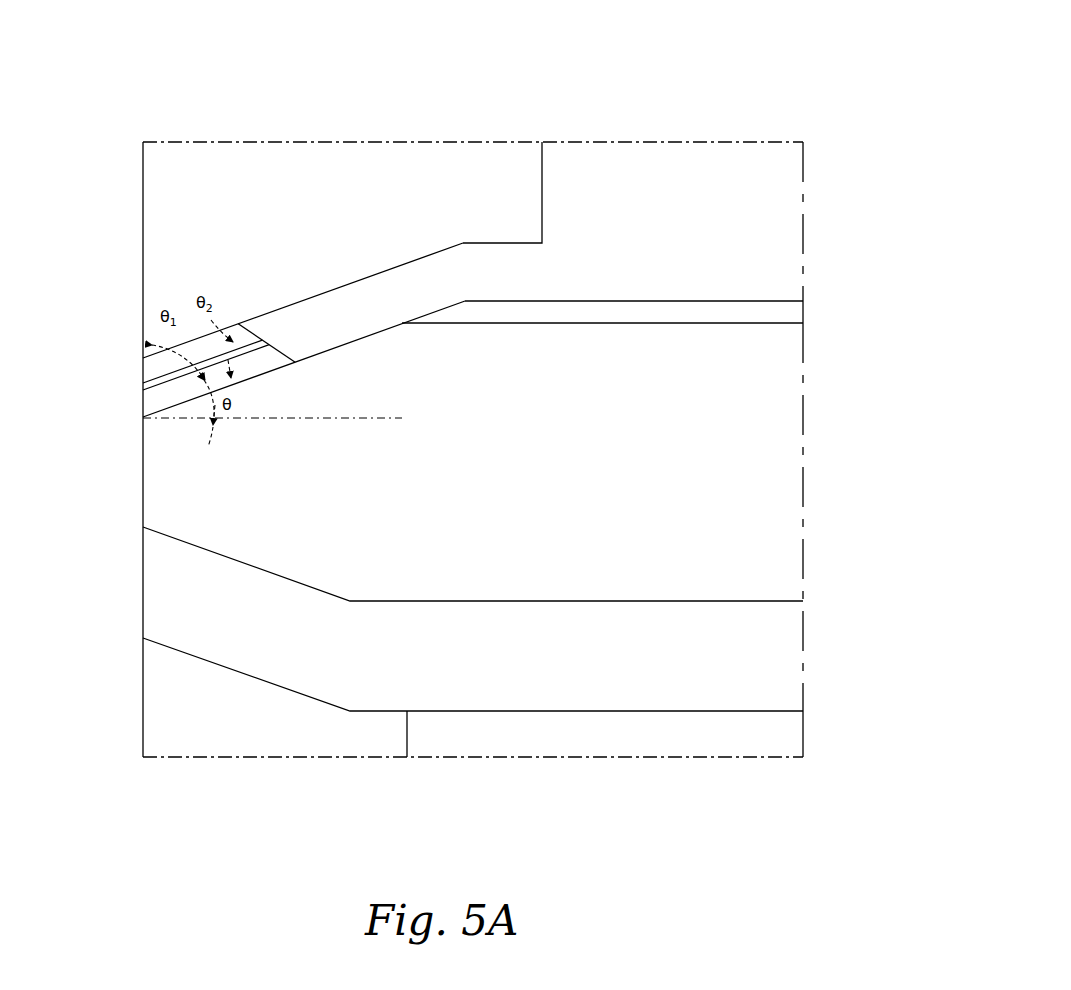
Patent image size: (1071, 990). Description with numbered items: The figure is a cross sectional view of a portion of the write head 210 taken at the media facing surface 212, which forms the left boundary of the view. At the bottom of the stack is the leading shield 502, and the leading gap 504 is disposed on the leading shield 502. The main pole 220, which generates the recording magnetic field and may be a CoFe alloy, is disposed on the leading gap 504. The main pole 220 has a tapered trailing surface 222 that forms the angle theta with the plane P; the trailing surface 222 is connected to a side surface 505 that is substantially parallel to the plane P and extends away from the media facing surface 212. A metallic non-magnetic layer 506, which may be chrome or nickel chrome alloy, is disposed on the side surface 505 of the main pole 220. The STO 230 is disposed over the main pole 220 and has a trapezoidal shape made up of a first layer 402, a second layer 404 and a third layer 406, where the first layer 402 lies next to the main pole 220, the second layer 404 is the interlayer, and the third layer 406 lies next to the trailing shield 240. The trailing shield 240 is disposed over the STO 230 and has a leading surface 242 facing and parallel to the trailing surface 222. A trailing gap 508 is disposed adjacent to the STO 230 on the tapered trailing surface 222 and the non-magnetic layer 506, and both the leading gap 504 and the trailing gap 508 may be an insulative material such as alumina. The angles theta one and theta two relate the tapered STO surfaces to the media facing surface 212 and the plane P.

The write head 210 is at (650, 85).
The media facing surface 212 is at (143, 193).
The main pole 220 is at (544, 472).
The trailing surface 222 is at (338, 347).
The STO 230 is at (78, 335).
The trailing shield 240 is at (300, 227).
The leading surface 242 is at (426, 254).
The first layer 402 is at (141, 401).
The second layer 404 is at (141, 387).
The third layer 406 is at (141, 369).
The leading shield 502 is at (241, 725).
The leading gap 504 is at (241, 626).
The side surface 505 is at (548, 325).
The metallic non-magnetic layer 506 is at (597, 311).
The trailing gap 508 is at (388, 315).